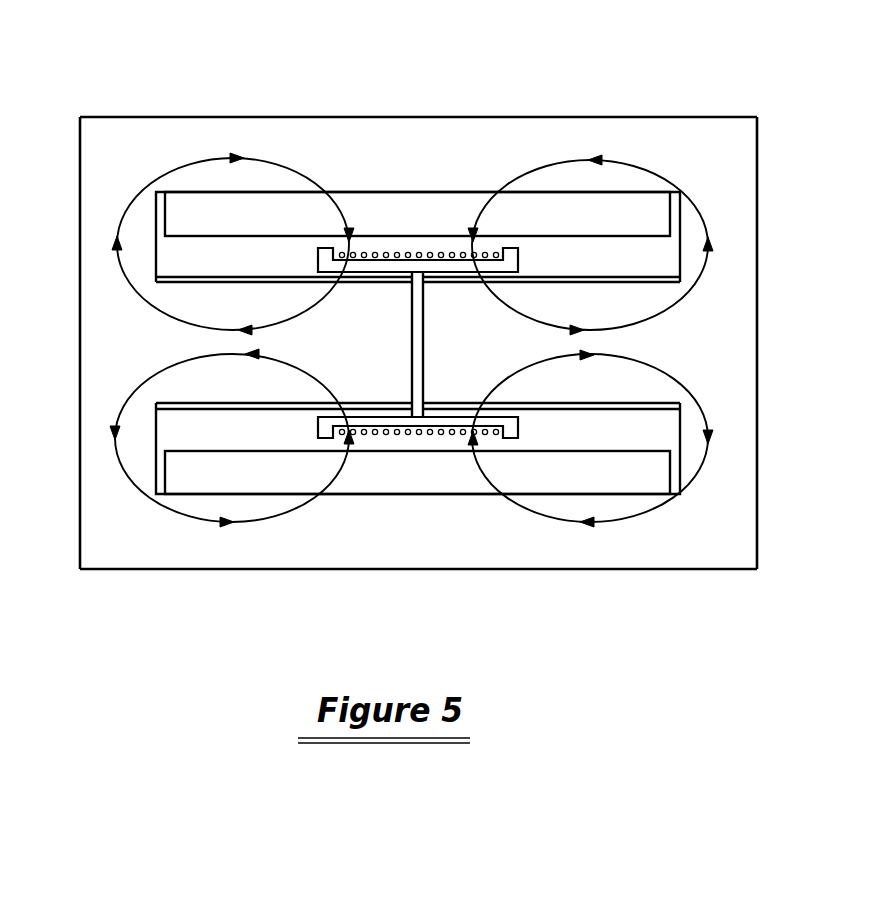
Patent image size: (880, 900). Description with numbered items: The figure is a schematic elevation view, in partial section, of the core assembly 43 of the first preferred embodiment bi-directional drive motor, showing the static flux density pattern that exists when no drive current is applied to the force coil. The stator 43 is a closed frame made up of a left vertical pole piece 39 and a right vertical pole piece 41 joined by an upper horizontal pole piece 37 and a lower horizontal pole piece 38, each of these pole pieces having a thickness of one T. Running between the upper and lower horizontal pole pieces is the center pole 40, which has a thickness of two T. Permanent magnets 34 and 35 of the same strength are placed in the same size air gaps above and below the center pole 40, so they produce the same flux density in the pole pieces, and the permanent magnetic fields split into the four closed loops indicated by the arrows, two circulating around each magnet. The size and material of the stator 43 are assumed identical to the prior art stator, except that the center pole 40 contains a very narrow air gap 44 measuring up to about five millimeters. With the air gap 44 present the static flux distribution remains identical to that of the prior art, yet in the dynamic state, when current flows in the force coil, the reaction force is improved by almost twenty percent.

The permanent magnet 34 is at (195, 198).
The permanent magnet 35 is at (213, 480).
The upper horizontal pole piece 37 is at (545, 127).
The lower horizontal pole piece 38 is at (488, 553).
The vertical pole piece 39 is at (98, 310).
The center pole 40 is at (380, 356).
The vertical pole piece 41 is at (735, 335).
The core assembly 43 is at (436, 94).
The air gap 44 is at (418, 345).